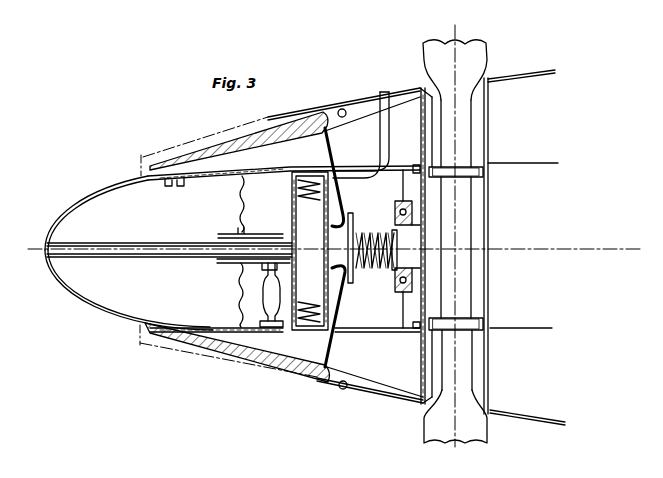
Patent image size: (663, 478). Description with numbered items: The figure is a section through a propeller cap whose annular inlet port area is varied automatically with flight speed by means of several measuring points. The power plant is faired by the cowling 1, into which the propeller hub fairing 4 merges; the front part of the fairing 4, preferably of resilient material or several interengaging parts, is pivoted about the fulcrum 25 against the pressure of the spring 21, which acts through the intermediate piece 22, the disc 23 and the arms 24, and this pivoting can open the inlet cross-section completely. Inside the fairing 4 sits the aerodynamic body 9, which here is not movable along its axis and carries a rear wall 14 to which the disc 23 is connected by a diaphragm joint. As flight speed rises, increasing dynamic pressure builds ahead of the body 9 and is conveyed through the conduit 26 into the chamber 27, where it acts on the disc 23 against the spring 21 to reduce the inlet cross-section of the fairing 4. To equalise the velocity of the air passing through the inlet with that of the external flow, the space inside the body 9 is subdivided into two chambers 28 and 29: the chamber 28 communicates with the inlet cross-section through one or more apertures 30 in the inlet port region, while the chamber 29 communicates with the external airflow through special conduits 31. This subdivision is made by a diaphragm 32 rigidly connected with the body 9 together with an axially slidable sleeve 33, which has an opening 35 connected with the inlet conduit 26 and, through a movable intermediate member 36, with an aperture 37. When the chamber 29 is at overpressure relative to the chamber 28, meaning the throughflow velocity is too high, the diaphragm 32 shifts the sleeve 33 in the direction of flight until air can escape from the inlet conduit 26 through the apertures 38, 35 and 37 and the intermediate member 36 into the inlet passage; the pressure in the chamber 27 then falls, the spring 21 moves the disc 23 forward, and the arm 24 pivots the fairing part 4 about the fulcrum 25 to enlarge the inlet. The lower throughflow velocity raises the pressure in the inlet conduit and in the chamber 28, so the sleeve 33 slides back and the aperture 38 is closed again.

The cowling 1 is at (508, 78).
The fairing 4 is at (210, 142).
The aerodynamic body 9 is at (97, 302).
The rear wall 14 is at (295, 288).
The spring 21 is at (363, 231).
The intermediate piece 22 is at (353, 275).
The disc 23 is at (332, 294).
The arms 24 is at (327, 368).
The fulcrum 25 is at (343, 389).
The conduit 26 is at (97, 252).
The chamber 27 is at (307, 328).
The chamber 28 is at (107, 215).
The chamber 29 is at (267, 178).
The apertures 30 is at (173, 177).
The conduits 31 is at (385, 138).
The diaphragm 32 is at (244, 210).
The sleeve 33 is at (230, 232).
The opening 35 is at (242, 300).
The intermediate member 36 is at (272, 300).
The aperture 37 is at (273, 328).
The aperture 38 is at (258, 257).